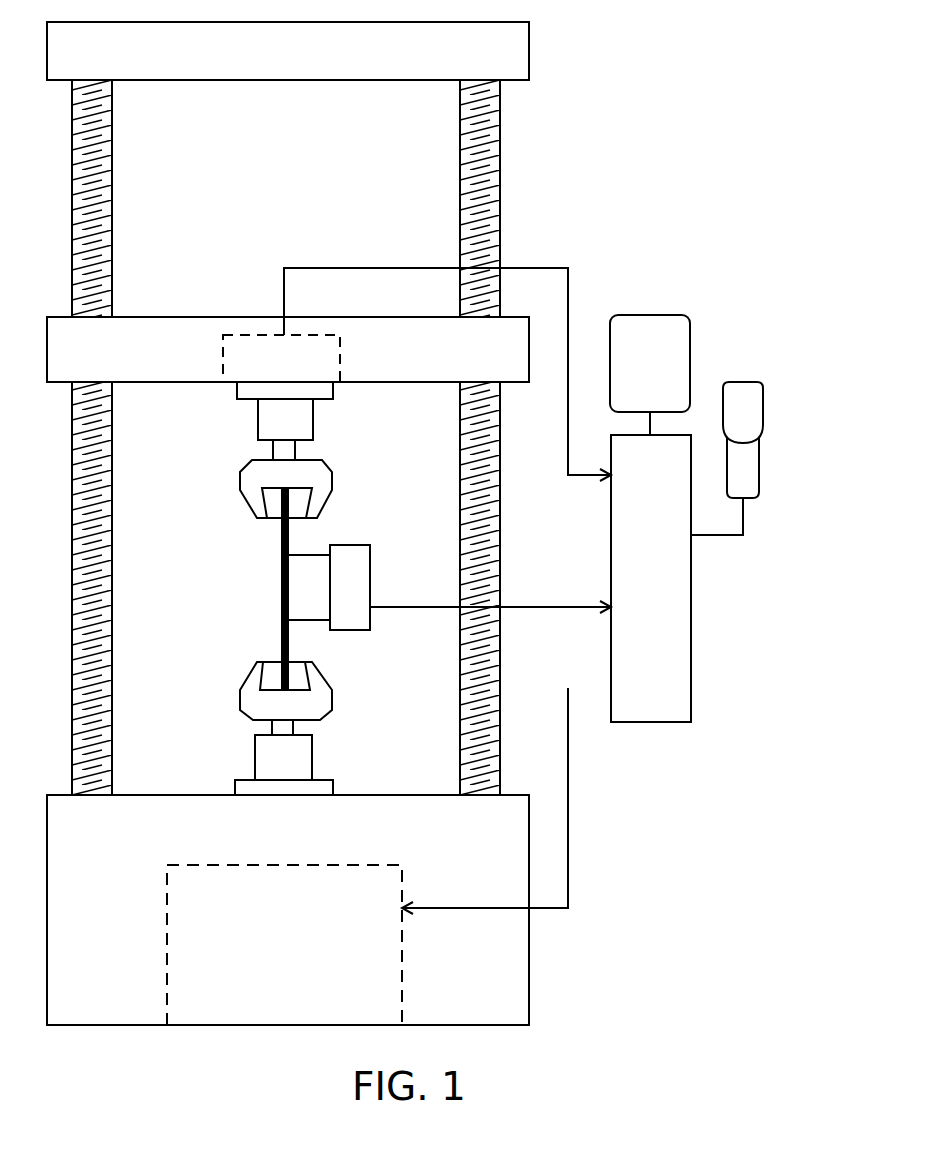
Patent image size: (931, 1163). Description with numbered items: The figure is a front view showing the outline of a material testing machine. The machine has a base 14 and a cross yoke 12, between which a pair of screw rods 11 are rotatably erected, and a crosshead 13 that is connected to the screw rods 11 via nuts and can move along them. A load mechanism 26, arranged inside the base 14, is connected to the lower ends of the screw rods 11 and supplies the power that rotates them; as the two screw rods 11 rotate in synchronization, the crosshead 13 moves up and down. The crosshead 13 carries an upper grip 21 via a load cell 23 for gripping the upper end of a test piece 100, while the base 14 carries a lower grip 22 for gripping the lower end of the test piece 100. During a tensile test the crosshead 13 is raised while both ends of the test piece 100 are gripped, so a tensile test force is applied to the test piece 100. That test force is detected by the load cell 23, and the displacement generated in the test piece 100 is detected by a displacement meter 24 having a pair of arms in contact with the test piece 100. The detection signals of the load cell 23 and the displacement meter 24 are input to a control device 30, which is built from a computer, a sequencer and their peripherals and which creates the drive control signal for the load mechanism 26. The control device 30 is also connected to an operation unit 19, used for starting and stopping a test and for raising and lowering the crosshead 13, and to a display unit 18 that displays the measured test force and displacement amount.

The screw rods 11 is at (112, 180).
The cross yoke 12 is at (287, 67).
The crosshead 13 is at (143, 340).
The base 14 is at (165, 795).
The display unit 18 is at (640, 340).
The operation unit 19 is at (738, 392).
The upper grip 21 is at (320, 478).
The lower grip 22 is at (252, 682).
The load cell 23 is at (259, 350).
The displacement meter 24 is at (360, 572).
The load mechanism 26 is at (392, 958).
The control device 30 is at (655, 707).
The test piece 100 is at (280, 587).